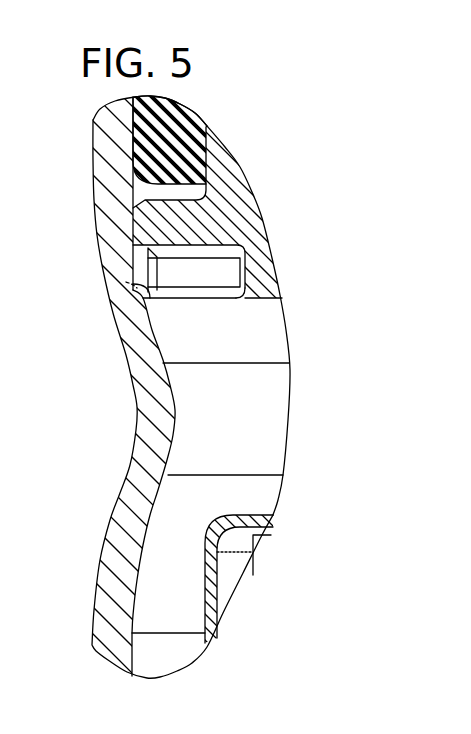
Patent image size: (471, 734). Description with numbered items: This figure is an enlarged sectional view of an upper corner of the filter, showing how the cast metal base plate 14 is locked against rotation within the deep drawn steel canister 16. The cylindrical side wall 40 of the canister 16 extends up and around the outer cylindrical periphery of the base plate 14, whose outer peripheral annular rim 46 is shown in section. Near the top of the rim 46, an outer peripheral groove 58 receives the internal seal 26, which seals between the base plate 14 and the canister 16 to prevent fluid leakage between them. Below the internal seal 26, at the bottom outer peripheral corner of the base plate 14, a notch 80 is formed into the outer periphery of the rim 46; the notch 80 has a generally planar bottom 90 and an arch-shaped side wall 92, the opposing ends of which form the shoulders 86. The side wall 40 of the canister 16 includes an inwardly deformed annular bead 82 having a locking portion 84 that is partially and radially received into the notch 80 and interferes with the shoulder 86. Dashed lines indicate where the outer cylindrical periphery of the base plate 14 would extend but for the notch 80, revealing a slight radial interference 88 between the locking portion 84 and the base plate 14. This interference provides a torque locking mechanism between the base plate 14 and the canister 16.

The base plate 14 is at (252, 184).
The canister 16 is at (95, 562).
The internal seal 26 is at (185, 112).
The side wall 40 is at (124, 491).
The outer peripheral annular rim 46 is at (266, 246).
The outer peripheral groove 58 is at (207, 150).
The notch 80 is at (203, 306).
The inwardly deformed annular bead 82 is at (176, 415).
The locking portion 84 is at (147, 298).
The shoulder 86 is at (153, 260).
The radial interference 88 is at (126, 282).
The planar bottom 90 is at (171, 247).
The arch-shaped side wall 92 is at (240, 288).